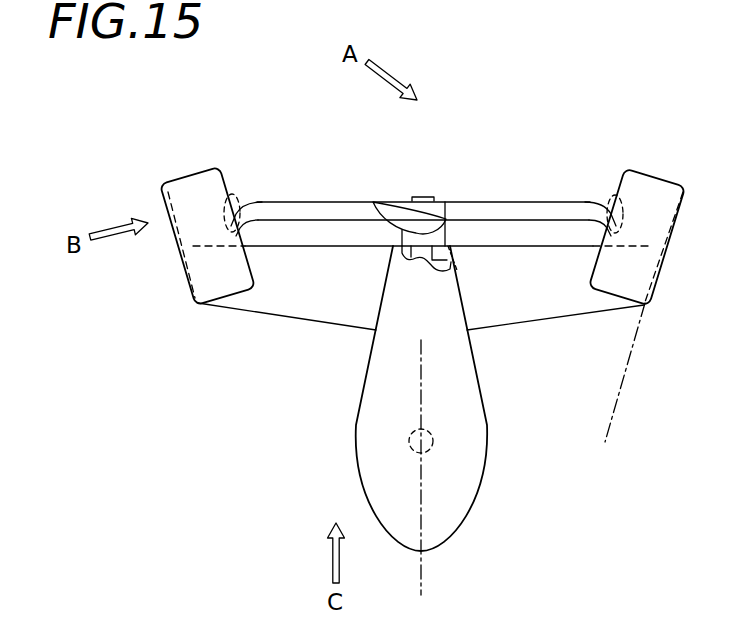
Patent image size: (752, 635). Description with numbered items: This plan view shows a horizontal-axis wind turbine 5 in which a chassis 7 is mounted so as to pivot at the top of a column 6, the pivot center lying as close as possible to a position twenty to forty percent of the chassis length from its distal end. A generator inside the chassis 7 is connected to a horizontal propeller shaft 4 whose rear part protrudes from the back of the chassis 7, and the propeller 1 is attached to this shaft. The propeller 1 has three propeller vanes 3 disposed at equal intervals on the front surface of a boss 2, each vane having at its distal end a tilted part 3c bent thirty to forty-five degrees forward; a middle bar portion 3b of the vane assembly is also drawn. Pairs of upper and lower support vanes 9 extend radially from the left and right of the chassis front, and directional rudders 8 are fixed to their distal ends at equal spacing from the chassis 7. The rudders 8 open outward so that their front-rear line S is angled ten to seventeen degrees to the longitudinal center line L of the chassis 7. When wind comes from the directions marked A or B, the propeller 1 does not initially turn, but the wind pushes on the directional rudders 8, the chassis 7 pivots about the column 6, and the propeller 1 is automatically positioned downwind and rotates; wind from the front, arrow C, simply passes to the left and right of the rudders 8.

The propeller 1 is at (312, 197).
The boss 2 is at (441, 200).
The propeller vanes 3 is at (392, 203).
The middle bar 3b is at (503, 202).
The tilted part 3c is at (228, 204).
The propeller shaft 4 is at (454, 262).
The horizontal-axis wind turbine 5 is at (560, 138).
The column 6 is at (433, 443).
The chassis 7 is at (355, 465).
The directional rudders 8 is at (180, 272).
The support vanes 9 is at (331, 297).
The longitudinal center line L is at (421, 572).
The front-rear line S is at (613, 412).